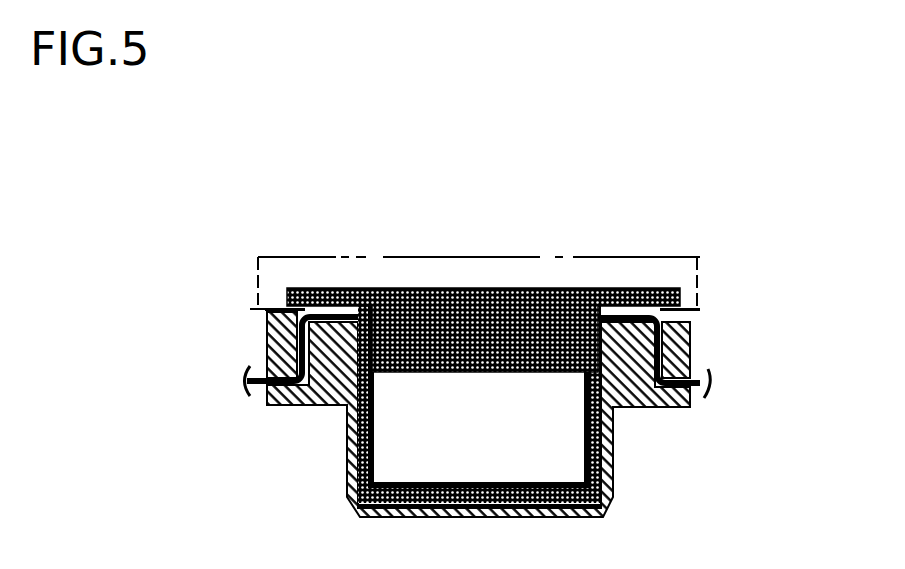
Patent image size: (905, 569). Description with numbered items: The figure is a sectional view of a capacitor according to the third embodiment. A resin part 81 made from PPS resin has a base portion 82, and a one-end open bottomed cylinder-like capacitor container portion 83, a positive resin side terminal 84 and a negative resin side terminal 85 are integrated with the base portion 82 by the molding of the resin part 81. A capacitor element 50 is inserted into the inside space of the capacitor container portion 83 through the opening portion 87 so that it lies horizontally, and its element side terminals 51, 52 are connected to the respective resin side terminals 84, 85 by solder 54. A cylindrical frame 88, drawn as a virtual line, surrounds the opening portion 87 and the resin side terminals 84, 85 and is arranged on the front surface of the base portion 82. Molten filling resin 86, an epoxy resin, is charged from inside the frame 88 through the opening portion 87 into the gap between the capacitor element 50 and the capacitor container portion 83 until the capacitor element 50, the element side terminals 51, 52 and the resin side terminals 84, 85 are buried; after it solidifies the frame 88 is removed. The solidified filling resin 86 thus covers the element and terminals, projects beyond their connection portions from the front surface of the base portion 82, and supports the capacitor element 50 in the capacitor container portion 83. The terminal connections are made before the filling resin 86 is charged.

The capacitor element 50 is at (530, 410).
The element side terminal 51 is at (640, 292).
The element side terminal 52 is at (312, 292).
The solder 54 is at (272, 297).
The resin part 81 is at (246, 346).
The base portion 82 is at (690, 342).
The capacitor container portion 83 is at (615, 497).
The positive resin side terminal 84 is at (705, 383).
The negative resin side terminal 85 is at (248, 381).
The filling resin 86 is at (497, 290).
The opening portion 87 is at (355, 335).
The cylindrical frame 88 is at (700, 257).